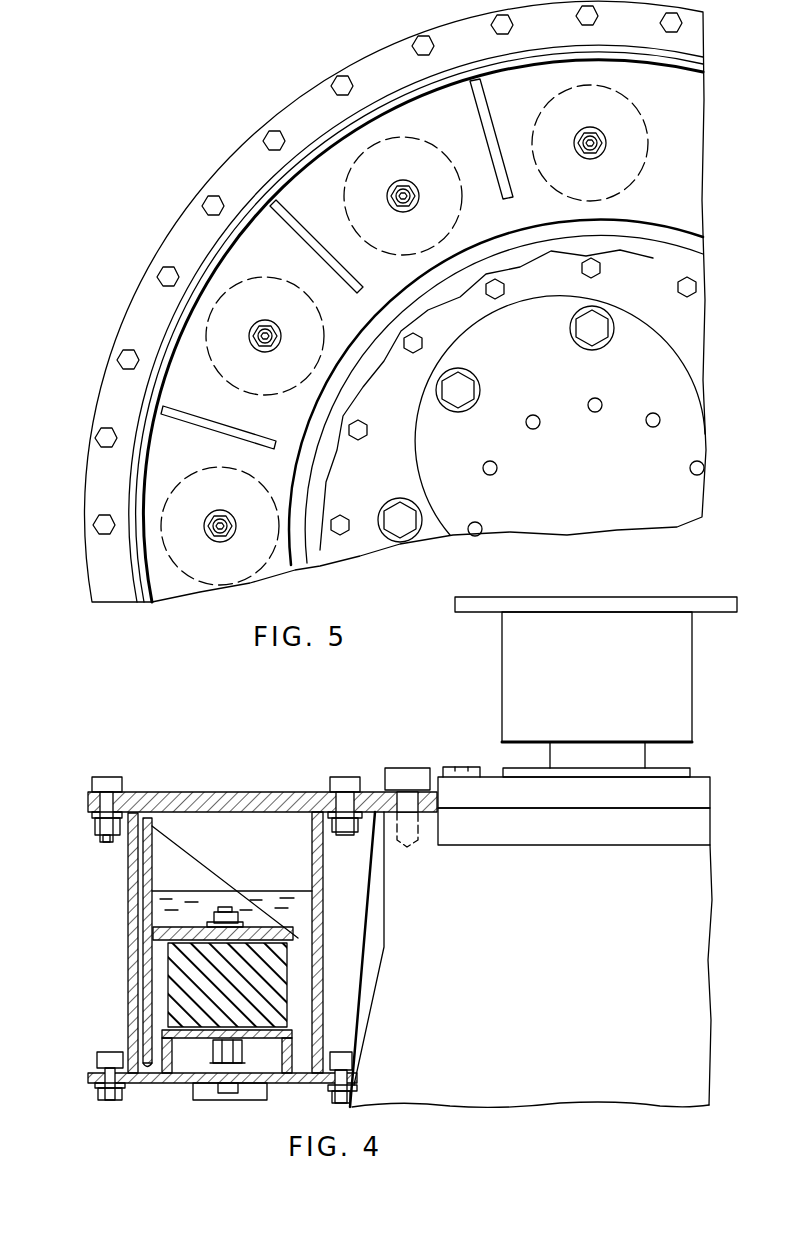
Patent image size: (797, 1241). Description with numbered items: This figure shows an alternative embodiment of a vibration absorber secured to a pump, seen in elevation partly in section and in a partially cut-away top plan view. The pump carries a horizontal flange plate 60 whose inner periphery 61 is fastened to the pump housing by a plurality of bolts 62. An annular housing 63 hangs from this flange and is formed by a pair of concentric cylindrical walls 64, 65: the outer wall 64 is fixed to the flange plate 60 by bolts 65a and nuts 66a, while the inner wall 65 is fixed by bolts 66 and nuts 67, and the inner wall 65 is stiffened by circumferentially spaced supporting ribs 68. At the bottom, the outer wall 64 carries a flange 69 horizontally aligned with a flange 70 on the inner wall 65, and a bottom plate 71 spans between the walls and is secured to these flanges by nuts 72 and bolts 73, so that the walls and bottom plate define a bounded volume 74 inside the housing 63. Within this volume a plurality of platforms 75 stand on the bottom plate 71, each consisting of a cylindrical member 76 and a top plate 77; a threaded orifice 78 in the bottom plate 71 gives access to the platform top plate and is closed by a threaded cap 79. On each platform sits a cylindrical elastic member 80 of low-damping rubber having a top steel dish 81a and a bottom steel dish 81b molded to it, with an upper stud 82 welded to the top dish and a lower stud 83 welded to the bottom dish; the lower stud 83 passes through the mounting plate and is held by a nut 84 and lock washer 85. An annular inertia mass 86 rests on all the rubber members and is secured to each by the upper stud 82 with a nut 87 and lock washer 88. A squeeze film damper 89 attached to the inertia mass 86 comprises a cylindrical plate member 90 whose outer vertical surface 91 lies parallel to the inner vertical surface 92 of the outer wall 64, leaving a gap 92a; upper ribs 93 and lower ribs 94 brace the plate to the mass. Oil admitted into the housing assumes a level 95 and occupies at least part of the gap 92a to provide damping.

In FIG. 5, the horizontal flange plate 60 is at (130, 308).
In FIG. 4, the horizontal flange plate 60 is at (262, 792).
In FIG. 5, the inner periphery 61 is at (364, 553).
In FIG. 4, the inner periphery 61 is at (437, 804).
In FIG. 5, the bolts 62 is at (600, 328).
In FIG. 4, the bolts 62 is at (408, 768).
In FIG. 4, the annular housing 63 is at (112, 897).
In FIG. 4, the outer cylindrical wall 64 is at (129, 953).
In FIG. 4, the inner cylindrical wall 65 is at (321, 871).
In FIG. 5, the bolts 65a is at (414, 44).
In FIG. 4, the bolts 65a is at (108, 777).
In FIG. 5, the bolts 66 is at (583, 273).
In FIG. 4, the bolts 66 is at (345, 777).
In FIG. 4, the nuts 66a is at (95, 830).
In FIG. 4, the nuts 67 is at (330, 831).
In FIG. 4, the supporting ribs 68 is at (358, 983).
In FIG. 4, the flange 69 is at (96, 1071).
In FIG. 4, the flange 70 is at (353, 1065).
In FIG. 4, the bottom plate 71 is at (165, 1083).
In FIG. 4, the nuts 72 is at (96, 1097).
In FIG. 4, the bolts 73 is at (112, 1054).
In FIG. 4, the bounded volume 74 is at (223, 844).
In FIG. 4, the platforms 75 is at (293, 1033).
In FIG. 4, the cylindrical member 76 is at (308, 1085).
In FIG. 4, the top plate 77 is at (227, 985).
In FIG. 4, the orifice 78 is at (216, 1096).
In FIG. 4, the threaded cap 79 is at (262, 1095).
In FIG. 5, the cylindrical elastic member 80 is at (457, 231).
In FIG. 4, the cylindrical elastic member 80 is at (293, 967).
In FIG. 4, the top steel dish 81a is at (300, 940).
In FIG. 4, the bottom steel dish 81b is at (184, 1084).
In FIG. 5, the upper stud 82 is at (265, 328).
In FIG. 4, the upper stud 82 is at (236, 912).
In FIG. 4, the lower stud 83 is at (228, 1089).
In FIG. 4, the nut 84 is at (242, 1050).
In FIG. 4, the lock washer 85 is at (213, 1050).
In FIG. 5, the inertia mass 86 is at (324, 388).
In FIG. 4, the inertia mass 86 is at (288, 891).
In FIG. 5, the nut 87 is at (266, 344).
In FIG. 4, the nut 87 is at (216, 908).
In FIG. 4, the lock washer 88 is at (208, 922).
In FIG. 5, the squeeze film damper 89 is at (175, 382).
In FIG. 4, the squeeze film damper 89 is at (153, 855).
In FIG. 4, the cylindrical plate member 90 is at (148, 917).
In FIG. 5, the outer vertical surface 91 is at (151, 578).
In FIG. 4, the outer vertical surface 91 is at (140, 973).
In FIG. 5, the inner vertical surface 92 is at (136, 563).
In FIG. 4, the inner vertical surface 92 is at (147, 990).
In FIG. 5, the gap 92a is at (141, 602).
In FIG. 4, the gap 92a is at (141, 857).
In FIG. 5, the upper ribs 93 is at (481, 113).
In FIG. 4, the upper ribs 93 is at (185, 858).
In FIG. 4, the lower ribs 94 is at (146, 1085).
In FIG. 4, the oil level 95 is at (313, 900).